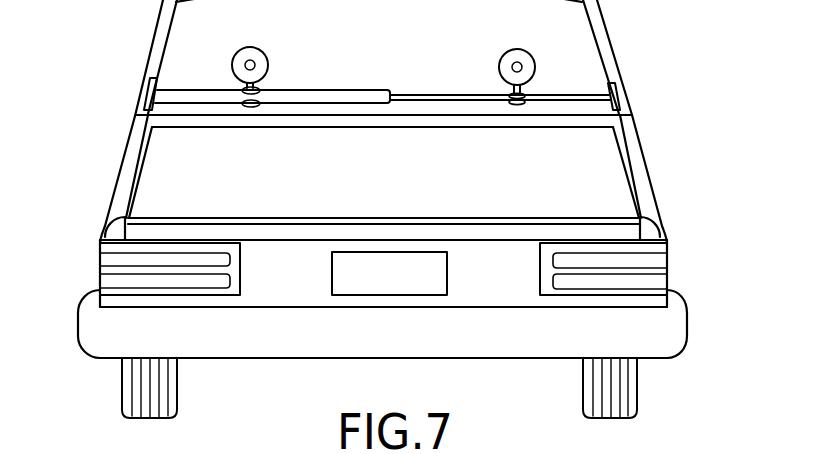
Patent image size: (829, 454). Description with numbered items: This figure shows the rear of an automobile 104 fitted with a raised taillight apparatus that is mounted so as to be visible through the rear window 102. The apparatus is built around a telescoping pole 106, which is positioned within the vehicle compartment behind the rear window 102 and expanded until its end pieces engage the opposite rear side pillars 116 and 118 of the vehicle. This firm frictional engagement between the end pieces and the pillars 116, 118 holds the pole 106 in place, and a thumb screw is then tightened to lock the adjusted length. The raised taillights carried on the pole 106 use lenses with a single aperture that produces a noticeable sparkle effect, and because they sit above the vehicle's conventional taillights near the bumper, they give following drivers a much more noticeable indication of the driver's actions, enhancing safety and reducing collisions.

The rear window 102 is at (585, 42).
The automobile 104 is at (664, 163).
The telescoping pole 106 is at (400, 80).
The rear side pillar 116 is at (618, 67).
The rear side pillar 118 is at (150, 55).